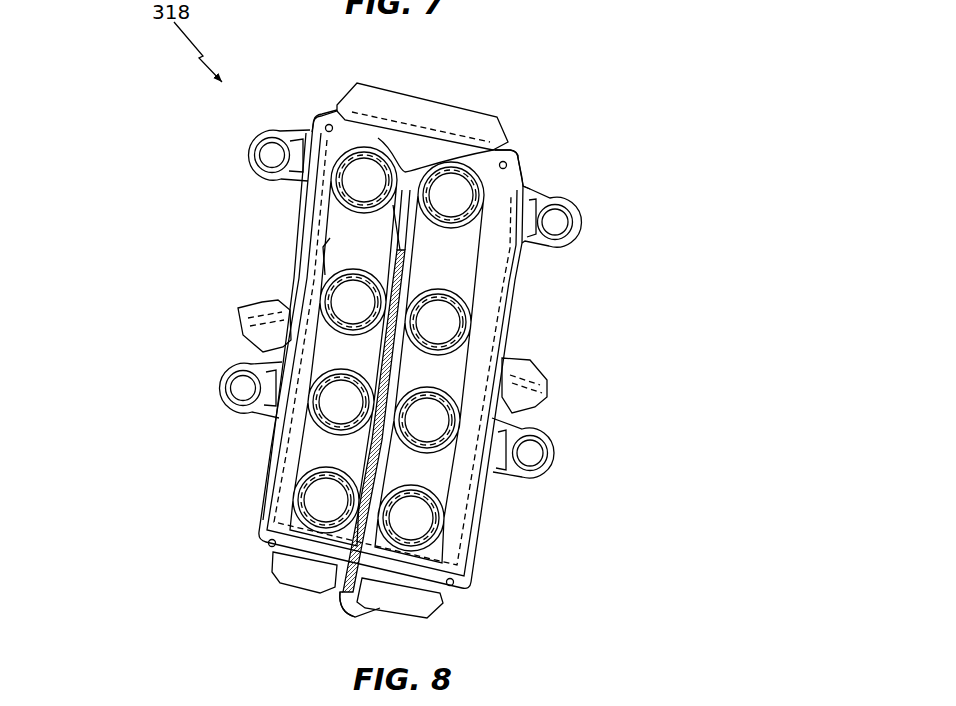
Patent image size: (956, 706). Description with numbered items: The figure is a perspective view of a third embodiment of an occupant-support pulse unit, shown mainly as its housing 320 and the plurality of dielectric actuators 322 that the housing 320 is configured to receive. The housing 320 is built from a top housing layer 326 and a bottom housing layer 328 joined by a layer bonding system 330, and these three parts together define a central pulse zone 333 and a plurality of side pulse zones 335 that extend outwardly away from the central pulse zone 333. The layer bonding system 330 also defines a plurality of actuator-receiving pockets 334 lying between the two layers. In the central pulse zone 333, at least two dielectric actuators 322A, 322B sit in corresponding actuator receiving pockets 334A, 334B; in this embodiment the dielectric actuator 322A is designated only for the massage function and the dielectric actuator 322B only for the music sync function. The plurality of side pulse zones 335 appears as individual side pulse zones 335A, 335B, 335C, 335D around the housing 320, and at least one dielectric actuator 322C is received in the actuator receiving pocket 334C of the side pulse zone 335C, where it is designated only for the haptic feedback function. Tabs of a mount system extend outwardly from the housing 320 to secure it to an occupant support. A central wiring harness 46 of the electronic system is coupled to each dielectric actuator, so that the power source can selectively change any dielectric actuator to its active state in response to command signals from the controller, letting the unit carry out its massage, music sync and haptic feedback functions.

The housing 320 is at (240, 261).
The plurality of dielectric actuators 322 is at (462, 363).
The dielectric actuator 322A is at (312, 503).
The dielectric actuator 322B is at (422, 518).
The dielectric actuator 322C is at (532, 442).
The top housing layer 326 is at (513, 173).
The bottom housing layer 328 is at (552, 187).
The layer bonding system 330 is at (303, 208).
The central pulse zone 333 is at (320, 140).
The cell collars 334 is at (450, 360).
The actuator receiving pocket 334A is at (297, 485).
The actuator receiving pocket 334B is at (438, 518).
The actuator receiving pocket 334C is at (574, 456).
The plurality of side pulse zones 335 is at (406, 307).
The first mounting boss 335A is at (252, 137).
The second mounting boss 335B is at (217, 378).
The side pulse zone 335C is at (571, 456).
The fourth mounting boss 335D is at (585, 203).
The central wiring harness 46 is at (352, 613).